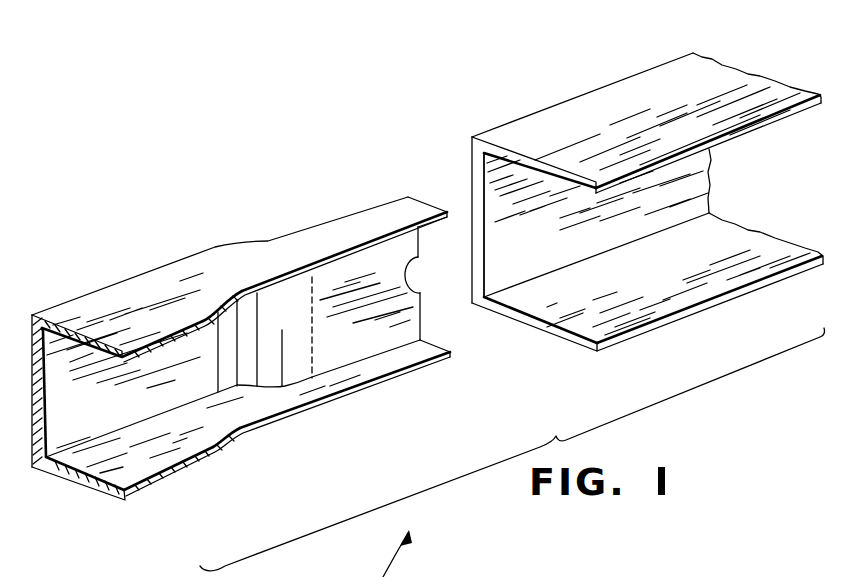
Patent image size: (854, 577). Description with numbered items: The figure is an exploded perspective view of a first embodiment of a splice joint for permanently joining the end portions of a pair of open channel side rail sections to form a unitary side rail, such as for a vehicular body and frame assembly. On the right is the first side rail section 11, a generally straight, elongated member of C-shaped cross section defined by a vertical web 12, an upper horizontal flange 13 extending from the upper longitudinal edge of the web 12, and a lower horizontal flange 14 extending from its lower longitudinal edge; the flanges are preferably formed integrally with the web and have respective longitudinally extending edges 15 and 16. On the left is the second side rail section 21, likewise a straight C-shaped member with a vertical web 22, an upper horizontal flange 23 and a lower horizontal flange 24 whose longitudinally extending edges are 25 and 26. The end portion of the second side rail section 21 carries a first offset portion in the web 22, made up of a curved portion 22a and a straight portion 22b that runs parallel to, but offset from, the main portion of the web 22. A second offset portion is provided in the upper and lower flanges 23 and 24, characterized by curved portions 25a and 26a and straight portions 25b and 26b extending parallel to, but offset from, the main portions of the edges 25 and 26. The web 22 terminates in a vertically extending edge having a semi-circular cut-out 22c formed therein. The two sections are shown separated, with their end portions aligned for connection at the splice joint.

The first side rail section 11 is at (523, 89).
The vertical web 12 is at (546, 237).
The upper horizontal flange 13 is at (646, 122).
The lower horizontal flange 14 is at (677, 288).
The longitudinally extending edge 15 is at (737, 131).
The longitudinally extending edge 16 is at (718, 297).
The second side rail section 21 is at (152, 225).
The vertical web 22 is at (103, 412).
The curved portion 22a is at (282, 330).
The straight portion 22b is at (373, 290).
The cut-out 22c is at (413, 292).
The upper horizontal flange 23 is at (143, 312).
The lower horizontal flange 24 is at (167, 458).
The longitudinally extending edge 25 is at (137, 347).
The curved portion 25a is at (213, 310).
The straight portion 25b is at (340, 253).
The longitudinally extending edge 26 is at (152, 485).
The curved portion 26a is at (218, 447).
The straight portion 26b is at (362, 390).